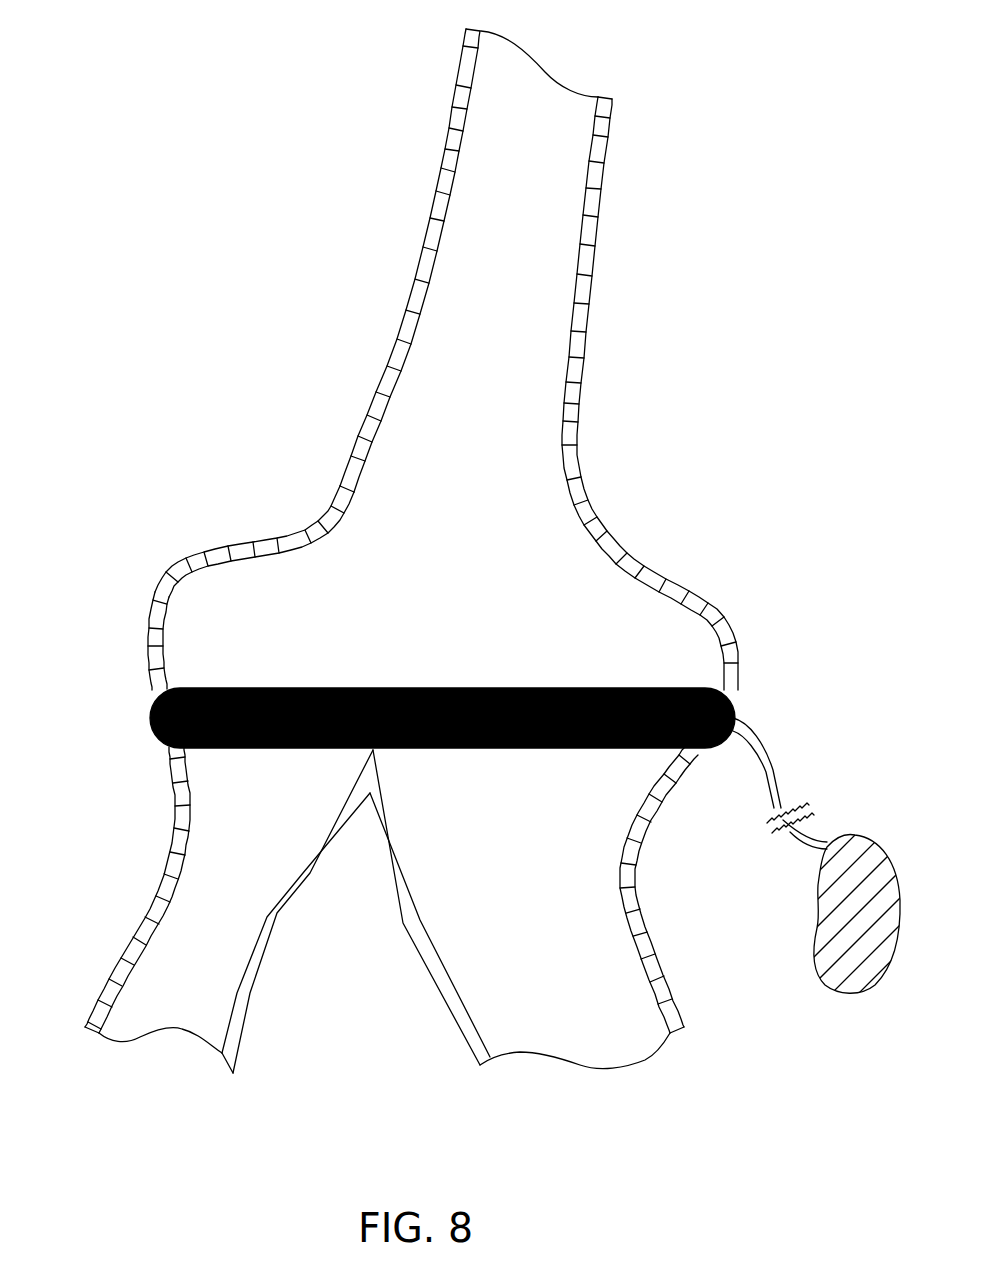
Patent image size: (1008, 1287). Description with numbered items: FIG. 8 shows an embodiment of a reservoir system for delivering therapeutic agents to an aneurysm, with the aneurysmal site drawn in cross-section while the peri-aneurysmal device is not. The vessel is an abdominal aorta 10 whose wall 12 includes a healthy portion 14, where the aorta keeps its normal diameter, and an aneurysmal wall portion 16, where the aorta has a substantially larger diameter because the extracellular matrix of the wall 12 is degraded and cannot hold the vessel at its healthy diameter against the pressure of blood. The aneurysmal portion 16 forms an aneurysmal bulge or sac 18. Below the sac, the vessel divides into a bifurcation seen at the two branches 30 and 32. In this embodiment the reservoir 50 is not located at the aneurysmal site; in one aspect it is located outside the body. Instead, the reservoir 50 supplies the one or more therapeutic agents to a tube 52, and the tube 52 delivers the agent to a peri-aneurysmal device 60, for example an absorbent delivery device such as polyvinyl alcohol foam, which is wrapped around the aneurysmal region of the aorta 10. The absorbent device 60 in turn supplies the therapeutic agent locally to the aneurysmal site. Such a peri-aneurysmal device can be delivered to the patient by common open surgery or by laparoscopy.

The abdominal aorta 10 is at (718, 182).
The wall 12 is at (604, 165).
The healthy portion 14 is at (466, 86).
The aneurysmal wall portion 16 is at (190, 570).
The aneurysmal bulge or sac 18 is at (188, 660).
The bifurcation 30 is at (142, 1040).
The bifurcation 32 is at (602, 1070).
The reservoir 50 is at (843, 900).
The tube 52 is at (777, 778).
The peri-aneurysmal device 60 is at (682, 687).